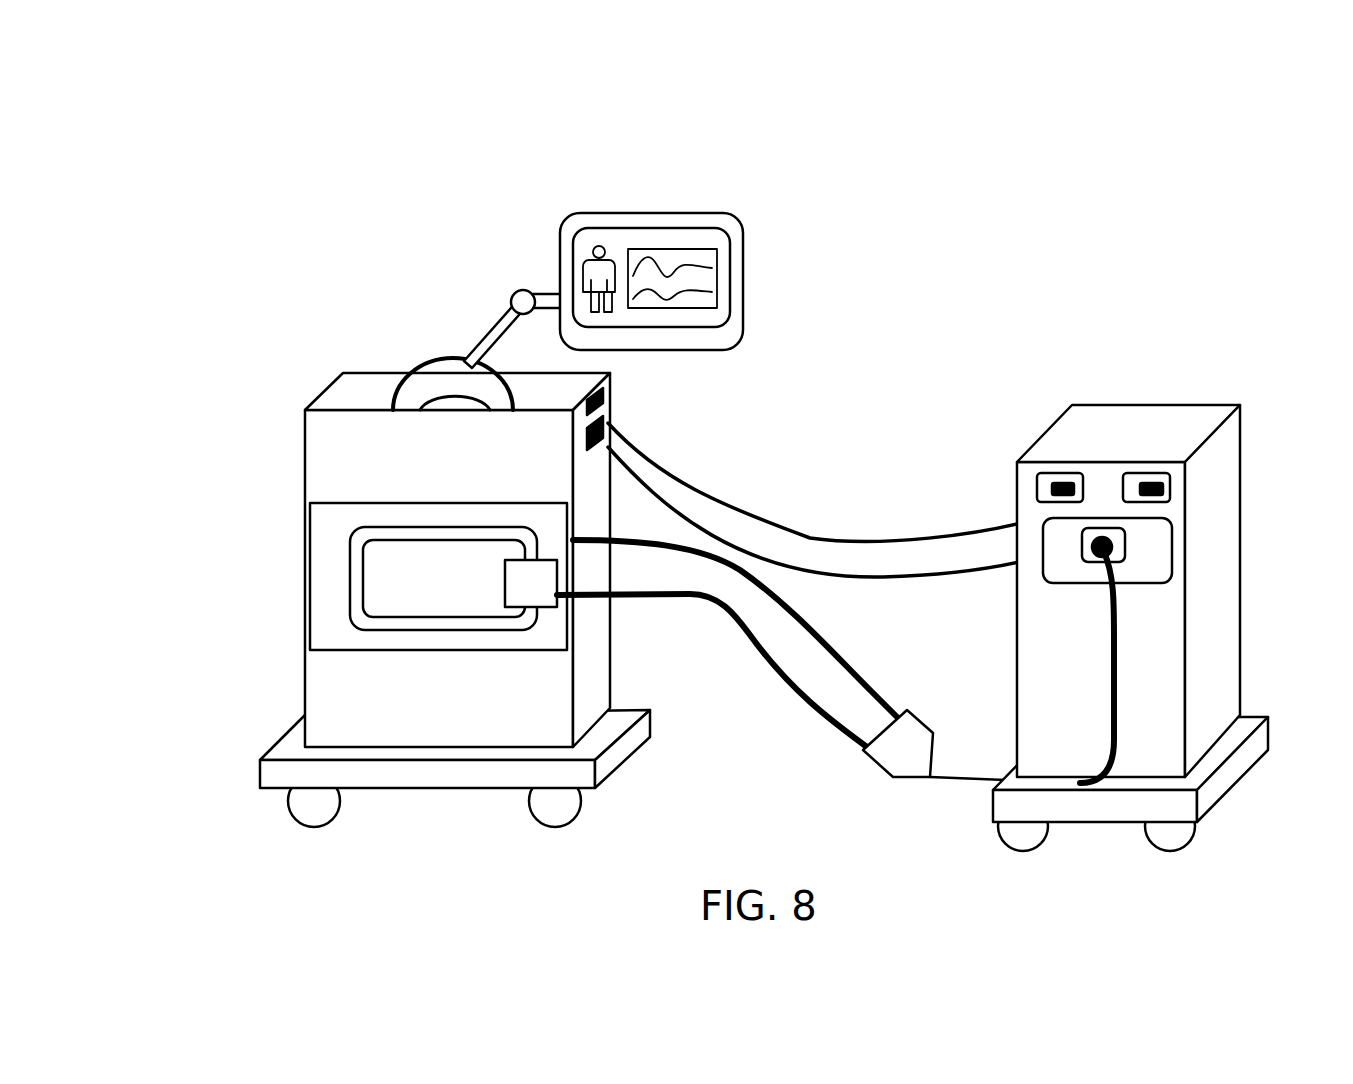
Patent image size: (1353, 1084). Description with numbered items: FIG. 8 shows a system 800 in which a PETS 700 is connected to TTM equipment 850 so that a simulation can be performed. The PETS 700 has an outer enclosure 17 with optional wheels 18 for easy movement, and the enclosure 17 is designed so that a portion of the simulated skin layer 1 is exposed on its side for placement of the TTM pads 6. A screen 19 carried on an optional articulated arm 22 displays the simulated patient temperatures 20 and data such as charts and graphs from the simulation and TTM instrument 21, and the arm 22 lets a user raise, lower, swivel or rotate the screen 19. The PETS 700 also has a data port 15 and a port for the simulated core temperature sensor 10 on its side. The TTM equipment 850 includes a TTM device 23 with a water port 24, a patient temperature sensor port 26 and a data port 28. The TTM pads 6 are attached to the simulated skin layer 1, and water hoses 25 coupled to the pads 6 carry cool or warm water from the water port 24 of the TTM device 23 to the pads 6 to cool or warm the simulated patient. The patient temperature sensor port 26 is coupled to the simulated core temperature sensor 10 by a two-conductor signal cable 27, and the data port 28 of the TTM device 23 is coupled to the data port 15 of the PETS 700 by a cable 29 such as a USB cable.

The system 800 is at (168, 150).
The PETS 700 is at (810, 347).
The TTM equipment 850 is at (1127, 345).
The simulated skin layer 1 is at (325, 545).
The TTM pads 6 is at (540, 620).
The simulated core temperature sensor 10 is at (613, 403).
The data port 15 is at (613, 443).
The outer enclosure 17 is at (335, 445).
The wheels 18 is at (282, 803).
The screen 19 is at (560, 218).
The simulated patient temperatures 20 is at (608, 250).
The data from the simulation and TTM instrument 21 is at (708, 272).
The articulated arm 22 is at (490, 340).
The TTM device 23 is at (1140, 405).
The water port 24 is at (1127, 542).
The water hoses 25 is at (862, 685).
The patient temperature sensor port 26 is at (1165, 492).
The cable 27 is at (875, 530).
The data port 28 is at (1062, 483).
The cable 29 is at (695, 510).